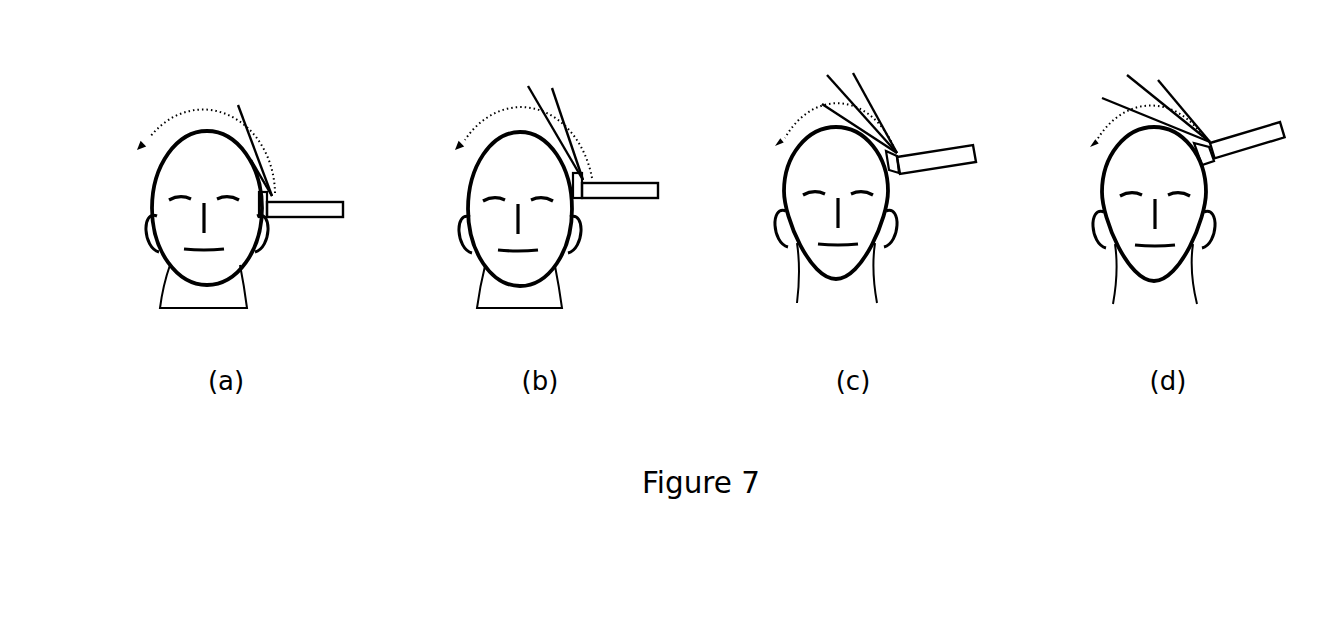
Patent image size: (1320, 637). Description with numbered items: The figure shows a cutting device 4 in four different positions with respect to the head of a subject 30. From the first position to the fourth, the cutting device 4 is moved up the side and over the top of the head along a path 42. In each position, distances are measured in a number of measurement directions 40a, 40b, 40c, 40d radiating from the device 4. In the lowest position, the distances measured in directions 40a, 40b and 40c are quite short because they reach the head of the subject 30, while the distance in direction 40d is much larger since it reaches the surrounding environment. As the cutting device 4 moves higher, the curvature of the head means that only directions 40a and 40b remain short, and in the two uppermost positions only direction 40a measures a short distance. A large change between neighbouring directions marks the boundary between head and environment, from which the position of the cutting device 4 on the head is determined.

The subject 30 is at (1115, 172).
The cutting device 4 is at (1245, 157).
The measurement direction 40a is at (1210, 137).
The measurement direction 40b is at (1110, 97).
The measurement direction 40c is at (1140, 80).
The measurement direction 40d is at (1170, 90).
The path 42 is at (1103, 132).